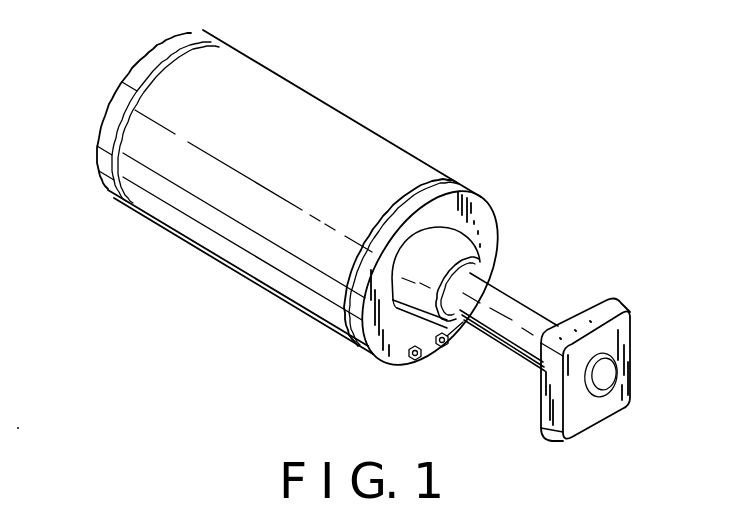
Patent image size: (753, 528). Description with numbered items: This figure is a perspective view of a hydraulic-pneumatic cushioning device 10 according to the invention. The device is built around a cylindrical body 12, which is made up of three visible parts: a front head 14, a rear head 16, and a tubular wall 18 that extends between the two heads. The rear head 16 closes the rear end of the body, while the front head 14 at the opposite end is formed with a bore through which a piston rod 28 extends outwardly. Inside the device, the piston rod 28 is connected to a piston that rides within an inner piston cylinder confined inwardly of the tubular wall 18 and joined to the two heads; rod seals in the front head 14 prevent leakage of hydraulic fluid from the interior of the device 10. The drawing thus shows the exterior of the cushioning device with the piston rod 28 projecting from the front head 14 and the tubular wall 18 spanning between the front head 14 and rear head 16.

The hydraulic-pneumatic cushioning device 10 is at (199, 299).
The cylindrical body 12 is at (377, 130).
The front head 14 is at (481, 210).
The rear head 16 is at (139, 63).
The tubular wall 18 is at (267, 84).
The piston rod 28 is at (527, 308).